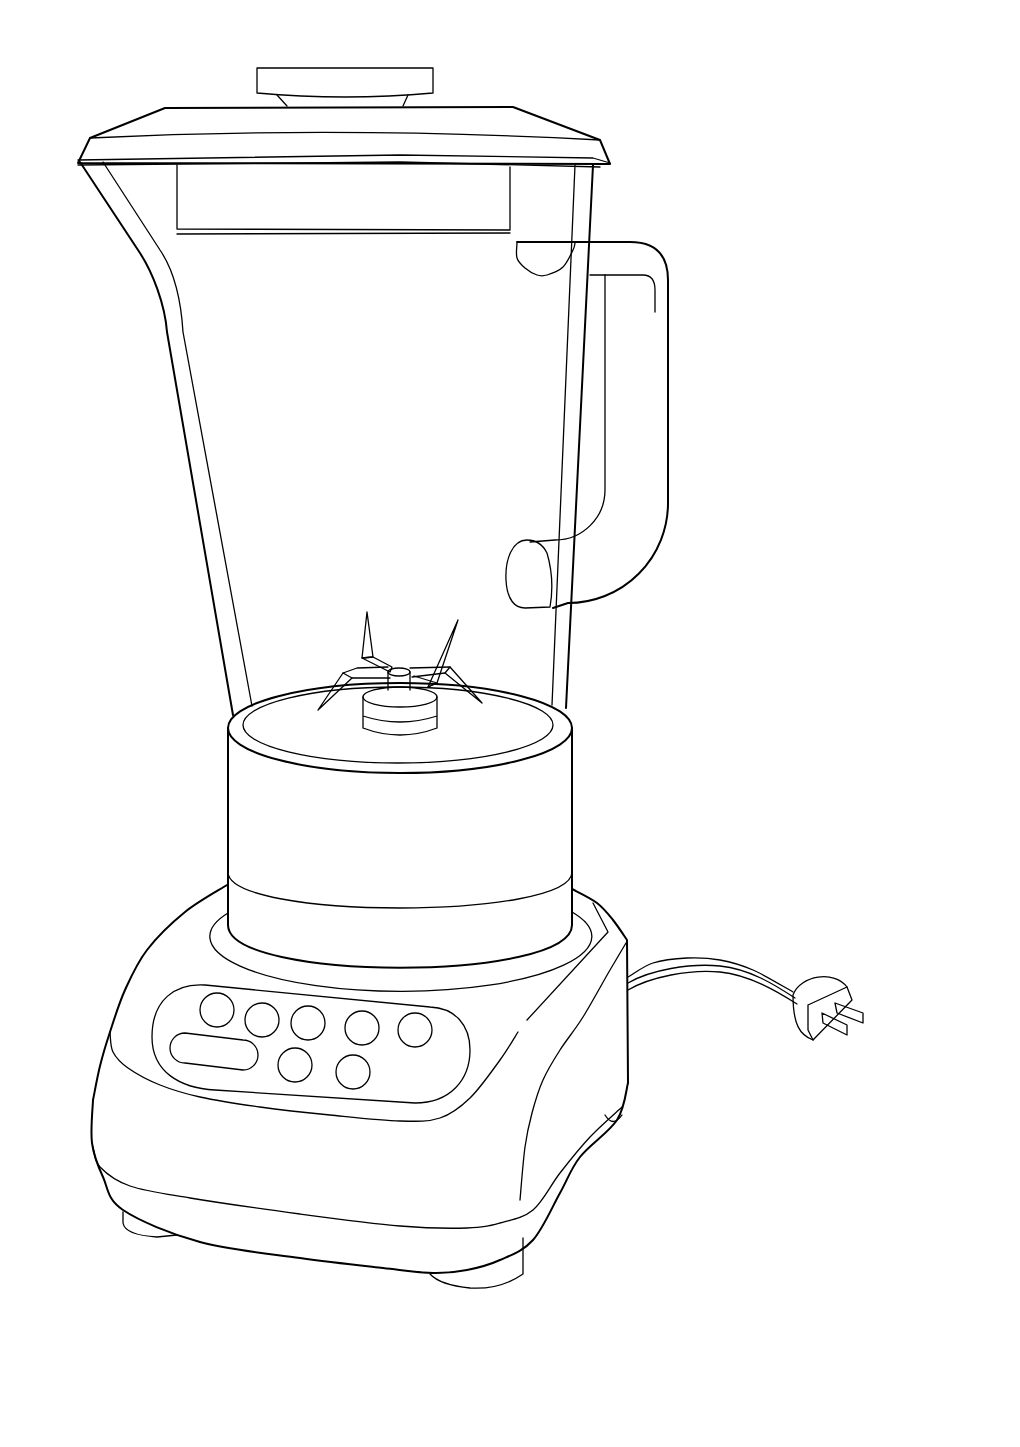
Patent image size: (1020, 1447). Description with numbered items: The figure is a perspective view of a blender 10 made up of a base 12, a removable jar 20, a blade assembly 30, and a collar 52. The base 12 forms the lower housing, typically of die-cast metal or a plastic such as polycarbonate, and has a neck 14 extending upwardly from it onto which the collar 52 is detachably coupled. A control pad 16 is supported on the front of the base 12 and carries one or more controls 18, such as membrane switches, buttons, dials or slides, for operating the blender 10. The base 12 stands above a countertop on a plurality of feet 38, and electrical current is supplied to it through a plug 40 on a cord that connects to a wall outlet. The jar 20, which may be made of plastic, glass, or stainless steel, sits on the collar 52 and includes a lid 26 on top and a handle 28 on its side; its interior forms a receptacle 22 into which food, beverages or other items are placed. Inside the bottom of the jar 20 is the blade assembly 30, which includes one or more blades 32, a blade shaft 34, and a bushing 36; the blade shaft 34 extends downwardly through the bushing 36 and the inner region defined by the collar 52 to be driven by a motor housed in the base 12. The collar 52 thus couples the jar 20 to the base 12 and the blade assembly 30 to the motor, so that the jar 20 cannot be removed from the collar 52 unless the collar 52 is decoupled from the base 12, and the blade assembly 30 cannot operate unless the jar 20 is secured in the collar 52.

The blender 10 is at (652, 78).
The base 12 is at (640, 916).
The neck 14 is at (565, 883).
The control pad 16 is at (417, 1080).
The controls 18 is at (295, 1067).
The removable jar 20 is at (135, 336).
The receptacle 22 is at (248, 608).
The lid 26 is at (522, 122).
The handle 28 is at (653, 405).
The blade assembly 30 is at (408, 619).
The blades 32 is at (363, 637).
The blade shaft 34 is at (403, 687).
The bushing 36 is at (383, 728).
The feet 38 is at (123, 1218).
The plug 40 is at (831, 956).
The collar 52 is at (245, 810).